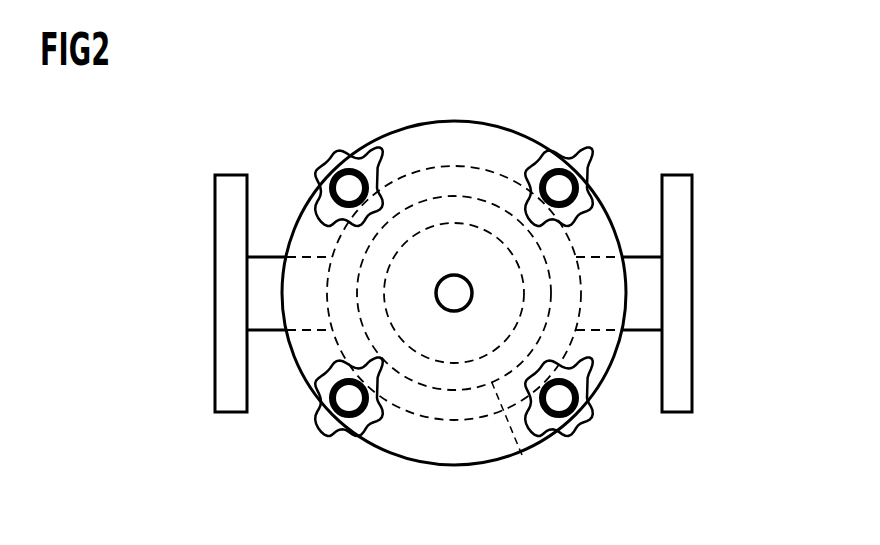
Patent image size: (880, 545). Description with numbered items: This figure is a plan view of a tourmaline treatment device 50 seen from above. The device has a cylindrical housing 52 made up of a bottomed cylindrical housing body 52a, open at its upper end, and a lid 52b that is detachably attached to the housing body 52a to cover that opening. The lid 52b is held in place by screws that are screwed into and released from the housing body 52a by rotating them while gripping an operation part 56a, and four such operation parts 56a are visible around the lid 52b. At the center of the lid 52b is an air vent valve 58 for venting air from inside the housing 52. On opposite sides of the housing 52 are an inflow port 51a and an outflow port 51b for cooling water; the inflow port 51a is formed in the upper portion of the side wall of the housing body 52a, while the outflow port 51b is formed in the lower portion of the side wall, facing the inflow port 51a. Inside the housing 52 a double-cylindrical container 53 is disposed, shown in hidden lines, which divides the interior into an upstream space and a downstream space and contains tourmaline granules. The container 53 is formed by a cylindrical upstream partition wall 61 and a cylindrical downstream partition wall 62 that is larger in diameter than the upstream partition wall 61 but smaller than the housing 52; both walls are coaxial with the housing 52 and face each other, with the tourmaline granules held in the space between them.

The tourmaline treatment device 50 is at (575, 114).
The inflow port 51a is at (645, 290).
The outflow port 51b is at (267, 295).
The housing 52 is at (474, 106).
The housing body 52a is at (408, 178).
The lid 52b is at (446, 148).
The container 53 is at (490, 194).
The operation part 56a is at (331, 170).
The air vent valve 58 is at (452, 297).
The upstream partition wall 61 is at (449, 382).
The downstream partition wall 62 is at (522, 455).